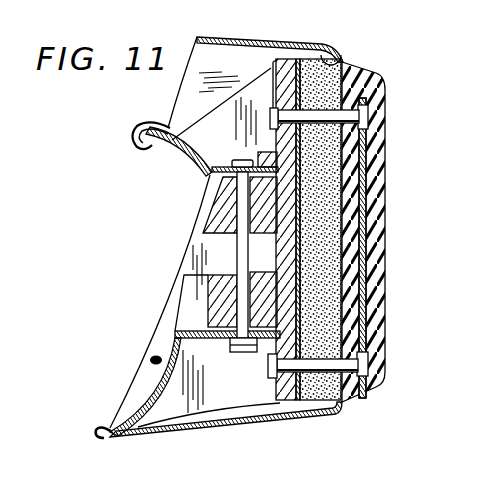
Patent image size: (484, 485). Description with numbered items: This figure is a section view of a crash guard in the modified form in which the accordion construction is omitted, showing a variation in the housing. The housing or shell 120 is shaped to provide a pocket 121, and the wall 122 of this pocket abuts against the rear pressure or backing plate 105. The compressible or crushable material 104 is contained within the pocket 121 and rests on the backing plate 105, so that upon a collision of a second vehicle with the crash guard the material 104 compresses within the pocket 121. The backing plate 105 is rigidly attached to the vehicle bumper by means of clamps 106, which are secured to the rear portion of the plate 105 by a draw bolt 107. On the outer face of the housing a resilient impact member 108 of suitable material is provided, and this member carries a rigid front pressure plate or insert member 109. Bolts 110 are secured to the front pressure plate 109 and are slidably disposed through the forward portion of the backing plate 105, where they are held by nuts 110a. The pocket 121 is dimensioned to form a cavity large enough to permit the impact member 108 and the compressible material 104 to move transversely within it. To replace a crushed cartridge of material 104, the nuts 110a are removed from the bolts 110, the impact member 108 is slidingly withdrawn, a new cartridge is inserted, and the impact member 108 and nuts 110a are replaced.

The compressible or crushable material 104 is at (324, 300).
The rear pressure or backing plate 105 is at (221, 214).
The clamps 106 is at (132, 136).
The draw bolt 107 is at (240, 258).
The resilient impact member 108 is at (376, 180).
The rigid front pressure plate or insert member 109 is at (362, 240).
The bolts 110 is at (352, 92).
The nuts 110a is at (272, 88).
The housing or shell 120 is at (277, 38).
The pocket 121 is at (322, 116).
The wall 122 is at (362, 152).